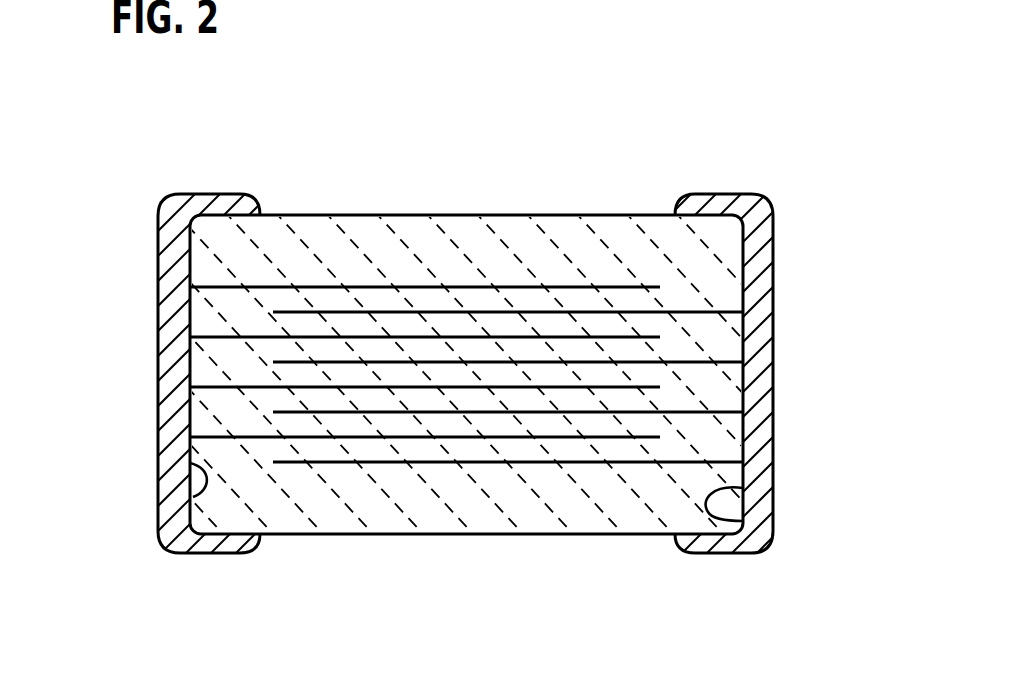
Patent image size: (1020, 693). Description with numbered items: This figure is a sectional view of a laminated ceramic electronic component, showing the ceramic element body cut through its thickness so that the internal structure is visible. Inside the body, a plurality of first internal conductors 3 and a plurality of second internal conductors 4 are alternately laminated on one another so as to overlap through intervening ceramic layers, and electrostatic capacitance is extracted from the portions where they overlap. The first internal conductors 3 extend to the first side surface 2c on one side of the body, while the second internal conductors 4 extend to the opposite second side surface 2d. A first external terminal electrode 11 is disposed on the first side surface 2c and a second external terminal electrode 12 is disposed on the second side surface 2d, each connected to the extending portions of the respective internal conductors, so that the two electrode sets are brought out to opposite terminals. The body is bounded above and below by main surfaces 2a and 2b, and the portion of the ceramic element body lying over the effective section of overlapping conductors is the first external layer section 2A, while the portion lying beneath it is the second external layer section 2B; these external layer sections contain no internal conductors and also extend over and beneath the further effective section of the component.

The first external terminal electrode 11 is at (158, 342).
The second external terminal electrode 12 is at (773, 287).
The first main surface of multilayer body 2a is at (392, 215).
The second main surface of multilayer body 2b is at (405, 534).
The first external layer section 2A is at (469, 255).
The second external layer section 2B is at (495, 518).
The first side surface 2c is at (193, 497).
The second side surface 2d is at (743, 521).
The first internal conductor 3 is at (318, 287).
The second internal conductor 4 is at (522, 310).